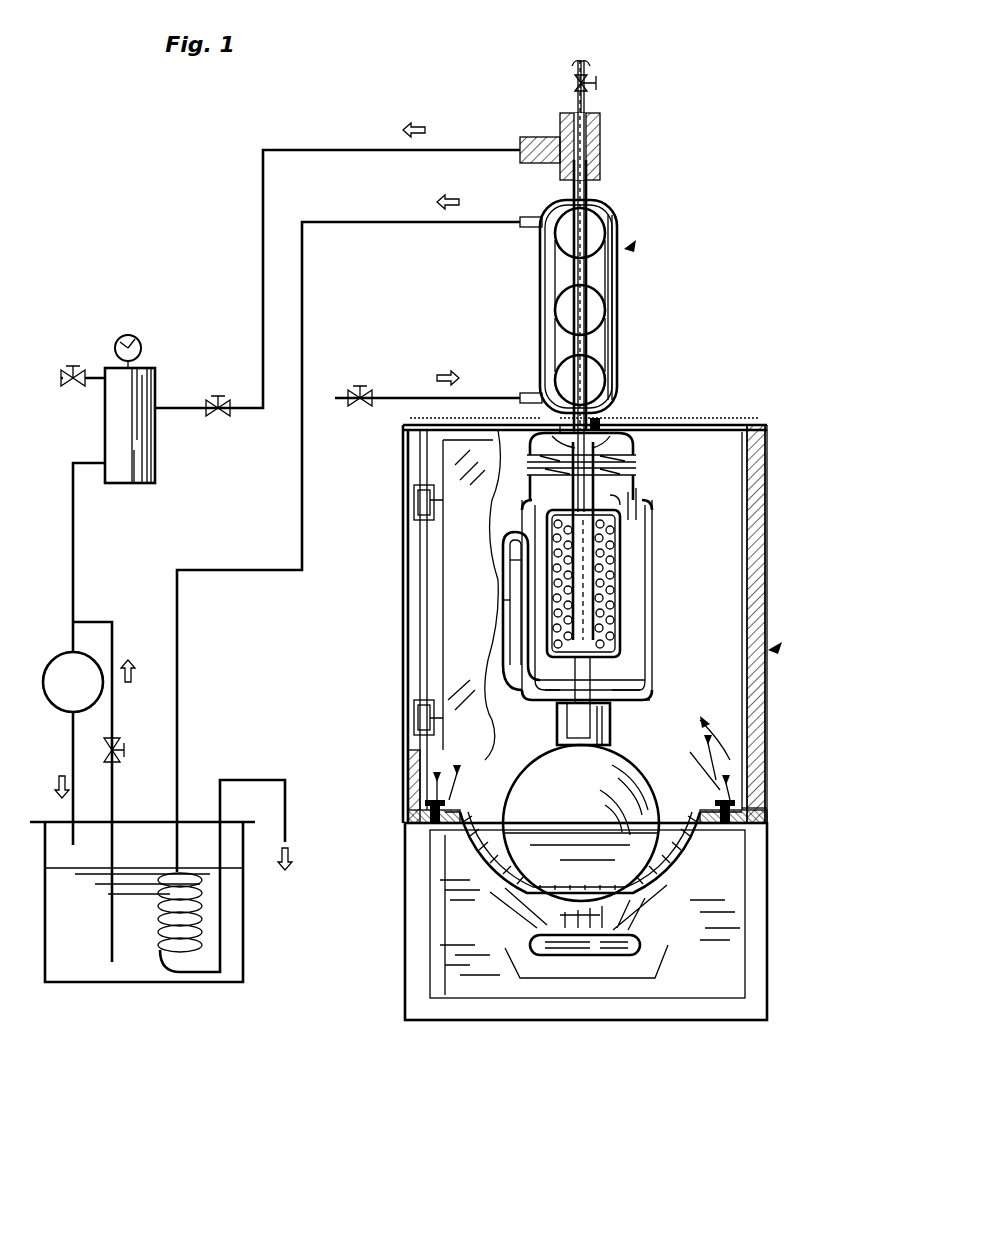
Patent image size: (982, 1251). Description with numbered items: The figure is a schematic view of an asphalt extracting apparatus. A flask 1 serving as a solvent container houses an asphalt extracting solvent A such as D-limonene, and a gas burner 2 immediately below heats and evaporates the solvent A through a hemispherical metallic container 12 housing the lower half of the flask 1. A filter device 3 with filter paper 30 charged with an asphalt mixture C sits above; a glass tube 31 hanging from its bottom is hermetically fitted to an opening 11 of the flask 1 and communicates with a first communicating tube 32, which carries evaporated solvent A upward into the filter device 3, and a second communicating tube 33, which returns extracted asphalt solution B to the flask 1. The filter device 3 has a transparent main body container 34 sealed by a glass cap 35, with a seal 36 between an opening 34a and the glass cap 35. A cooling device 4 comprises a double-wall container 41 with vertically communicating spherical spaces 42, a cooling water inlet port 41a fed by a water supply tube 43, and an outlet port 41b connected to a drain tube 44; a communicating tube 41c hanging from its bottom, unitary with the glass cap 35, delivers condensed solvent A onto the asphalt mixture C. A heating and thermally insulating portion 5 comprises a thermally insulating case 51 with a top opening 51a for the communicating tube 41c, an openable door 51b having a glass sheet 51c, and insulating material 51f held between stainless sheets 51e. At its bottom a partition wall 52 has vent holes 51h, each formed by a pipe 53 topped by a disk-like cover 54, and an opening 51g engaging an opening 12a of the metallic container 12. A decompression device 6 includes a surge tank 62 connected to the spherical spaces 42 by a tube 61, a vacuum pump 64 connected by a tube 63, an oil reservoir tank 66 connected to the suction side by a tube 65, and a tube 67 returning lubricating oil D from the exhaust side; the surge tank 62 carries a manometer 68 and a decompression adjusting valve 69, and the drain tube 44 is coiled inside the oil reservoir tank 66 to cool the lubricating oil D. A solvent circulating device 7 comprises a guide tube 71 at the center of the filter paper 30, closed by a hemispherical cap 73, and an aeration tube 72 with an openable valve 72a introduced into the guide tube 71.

The flask 1 is at (645, 790).
The gas burner 2 is at (600, 950).
The filter device 3 is at (636, 486).
The cooling device 4 is at (632, 246).
The heating and thermally insulating portion 5 is at (408, 785).
The decompression device 6 is at (58, 695).
The solvent circulating device 7 is at (603, 620).
The opening 11 is at (557, 718).
The metallic container 12 is at (682, 895).
The opening 12a is at (745, 800).
The filter paper 30 is at (626, 557).
The glass tube 31 is at (635, 712).
The first communicating tube 32 is at (650, 632).
The second communicating tube 33 is at (455, 668).
The main body container 34 is at (650, 648).
The opening 34a is at (490, 470).
The glass cap 35 is at (658, 432).
The seal 36 is at (636, 481).
The double-wall container 41 is at (540, 310).
The cooling water inlet port 41a is at (527, 393).
The cooling water outlet port 41b is at (528, 230).
The communicating tube 41c is at (470, 452).
The spherical spaces 42 is at (600, 243).
The water supply tube 43 is at (400, 395).
The drain tube 44 is at (380, 228).
The thermally insulating case 51 is at (776, 648).
The opening 51a is at (620, 427).
The openable door 51b is at (460, 646).
The glass sheet 51c is at (420, 636).
The stainless sheets 51e is at (767, 505).
The insulating material 51f is at (758, 541).
The opening 51g is at (455, 862).
The vent holes 51h is at (760, 815).
The partition wall 52 is at (747, 830).
The pipe 53 is at (425, 812).
The cover 54 is at (470, 790).
The tube 61 is at (358, 148).
The surge tank 62 is at (157, 390).
The tube 63 is at (76, 514).
The vacuum pump 64 is at (72, 676).
The tube 65 is at (90, 620).
The oil reservoir tank 66 is at (172, 985).
The tube 67 is at (70, 752).
The manometer 68 is at (140, 336).
The decompression adjusting valve 69 is at (62, 390).
The guide tube 71 is at (605, 545).
The aeration tube 72 is at (516, 294).
The openable valve 72a is at (603, 86).
The hemispherical cap 73 is at (655, 513).
The solvent A is at (567, 875).
The asphalt solution B is at (528, 598).
The asphalt mixture C is at (512, 548).
The lubricating oil D is at (77, 964).